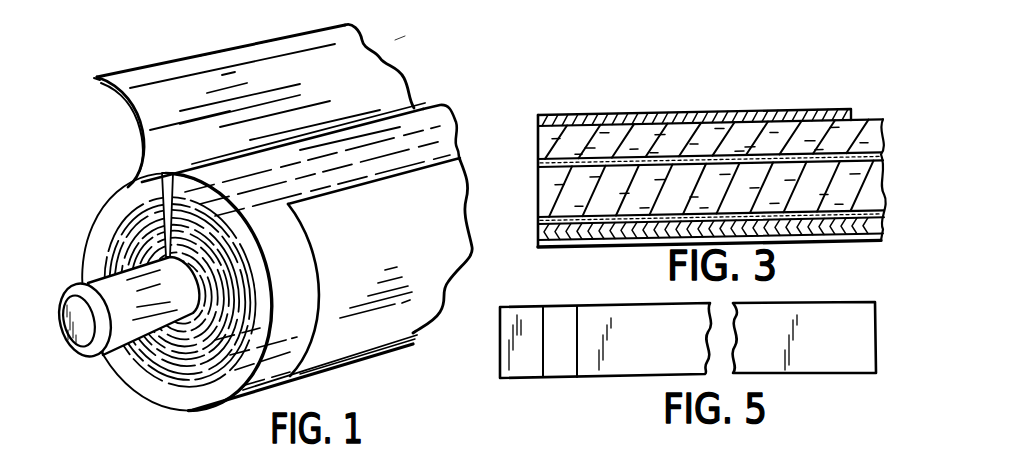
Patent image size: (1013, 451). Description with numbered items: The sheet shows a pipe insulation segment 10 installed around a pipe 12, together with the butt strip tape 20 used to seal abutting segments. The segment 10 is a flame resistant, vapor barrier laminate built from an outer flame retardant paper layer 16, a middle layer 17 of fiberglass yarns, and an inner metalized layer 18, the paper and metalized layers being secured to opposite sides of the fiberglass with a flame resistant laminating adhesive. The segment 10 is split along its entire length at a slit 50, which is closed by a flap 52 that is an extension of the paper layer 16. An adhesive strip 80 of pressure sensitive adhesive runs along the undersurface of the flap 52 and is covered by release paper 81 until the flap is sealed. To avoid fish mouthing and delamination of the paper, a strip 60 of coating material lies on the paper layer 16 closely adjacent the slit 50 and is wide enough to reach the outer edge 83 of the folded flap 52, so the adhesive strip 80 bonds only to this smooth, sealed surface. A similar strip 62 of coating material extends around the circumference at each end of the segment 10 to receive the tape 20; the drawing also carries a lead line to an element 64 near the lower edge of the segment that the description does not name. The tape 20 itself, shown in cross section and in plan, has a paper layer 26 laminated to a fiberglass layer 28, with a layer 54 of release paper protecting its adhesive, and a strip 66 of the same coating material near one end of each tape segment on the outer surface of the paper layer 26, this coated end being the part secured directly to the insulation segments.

In FIG. 1, the insulation segment 10 is at (422, 79).
In FIG. 1, the pipe 12 is at (66, 283).
In FIG. 1, the paper layer 16 is at (397, 221).
In FIG. 1, the fiberglass layer 17 is at (160, 385).
In FIG. 1, the metalized layer 18 is at (135, 370).
In FIG. 5, the butt strip tape 20 is at (813, 364).
In FIG. 3, the paper layer 26 is at (883, 132).
In FIG. 3, the fiberglass layer 28 is at (885, 195).
In FIG. 1, the slit 50 is at (158, 212).
In FIG. 1, the flap 52 is at (135, 123).
In FIG. 3, the release paper 54 is at (840, 243).
In FIG. 1, the strip of coating material 60 is at (464, 140).
In FIG. 1, the strip of coating material 62 is at (298, 297).
In FIG. 1, the bottom edge of sheath 64 is at (227, 414).
In FIG. 3, the strip of coating material 66 is at (720, 114).
In FIG. 5, the strip of coating material 66 is at (553, 320).
In FIG. 1, the adhesive strip 80 is at (173, 67).
In FIG. 1, the release paper 81 is at (101, 80).
In FIG. 1, the outer edge of flap 83 is at (256, 42).